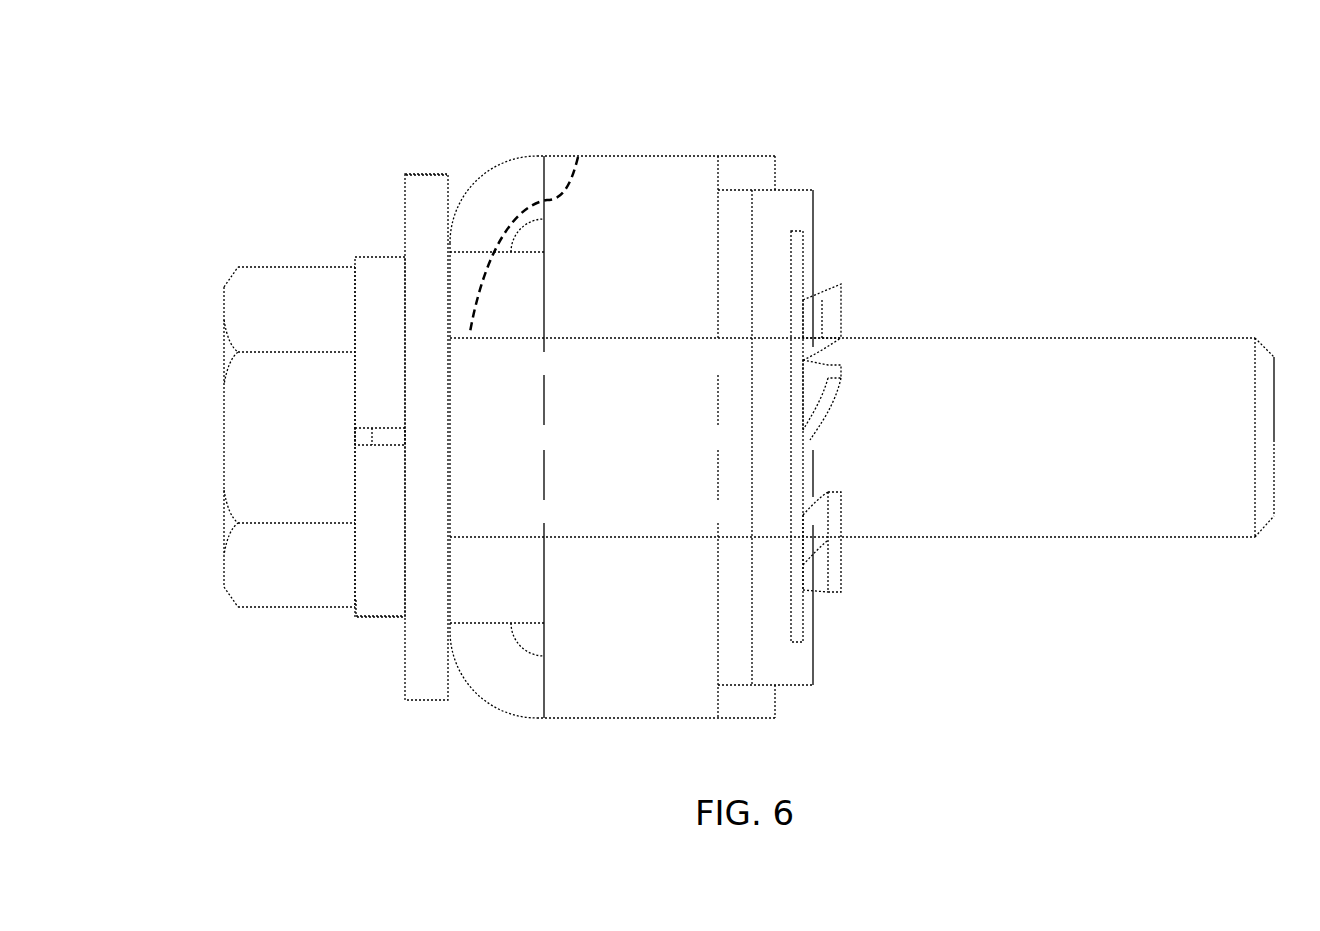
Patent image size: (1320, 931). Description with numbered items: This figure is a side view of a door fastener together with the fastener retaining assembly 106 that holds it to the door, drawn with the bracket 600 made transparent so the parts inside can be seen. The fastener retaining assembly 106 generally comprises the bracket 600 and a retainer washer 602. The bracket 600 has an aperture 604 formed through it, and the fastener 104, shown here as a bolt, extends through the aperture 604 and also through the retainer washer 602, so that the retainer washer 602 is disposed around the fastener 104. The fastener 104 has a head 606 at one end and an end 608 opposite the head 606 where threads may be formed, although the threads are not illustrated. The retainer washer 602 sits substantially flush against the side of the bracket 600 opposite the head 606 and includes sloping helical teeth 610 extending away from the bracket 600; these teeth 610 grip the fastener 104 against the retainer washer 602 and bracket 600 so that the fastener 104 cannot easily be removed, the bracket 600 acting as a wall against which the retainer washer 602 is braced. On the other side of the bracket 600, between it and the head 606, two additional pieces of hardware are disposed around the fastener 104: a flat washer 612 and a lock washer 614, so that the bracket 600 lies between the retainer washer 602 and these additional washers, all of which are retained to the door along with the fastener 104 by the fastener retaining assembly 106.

The fastener 104 is at (345, 258).
The fastener retaining assembly 106 is at (440, 92).
The bracket 600 is at (623, 177).
The retainer washer 602 is at (800, 548).
The aperture 604 is at (578, 157).
The head 606 is at (245, 288).
The end 608 is at (1233, 368).
The sloping helical teeth 610 is at (843, 375).
The flat washer 612 is at (425, 682).
The lock washer 614 is at (385, 590).